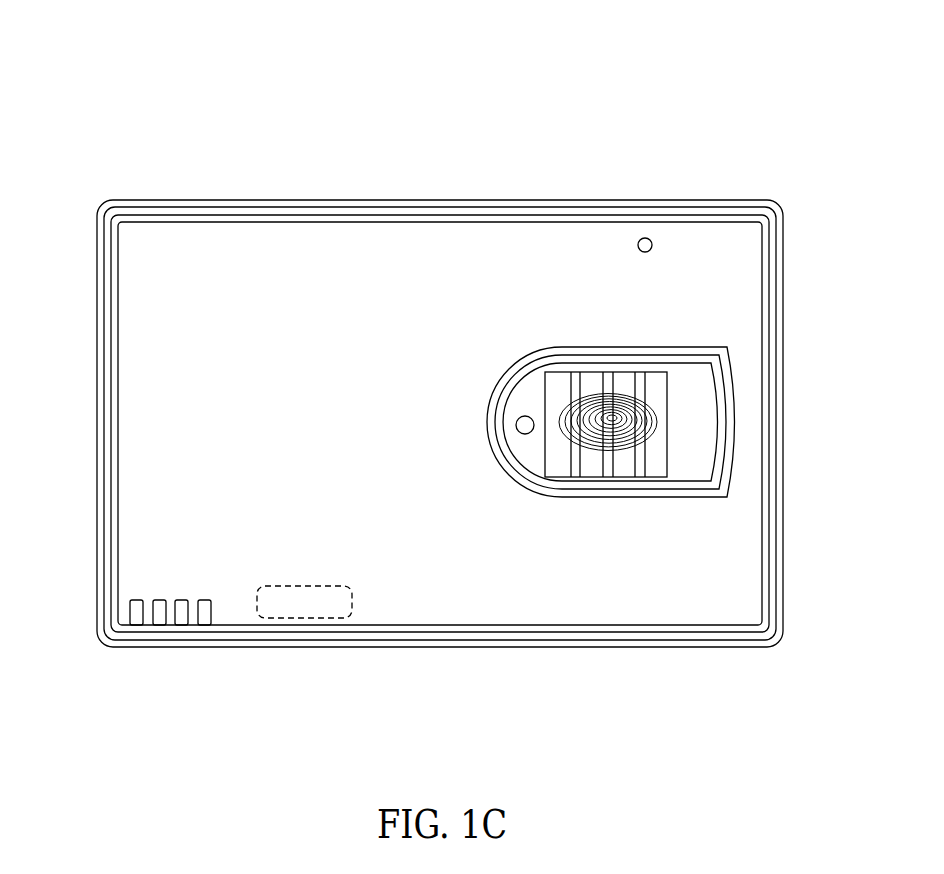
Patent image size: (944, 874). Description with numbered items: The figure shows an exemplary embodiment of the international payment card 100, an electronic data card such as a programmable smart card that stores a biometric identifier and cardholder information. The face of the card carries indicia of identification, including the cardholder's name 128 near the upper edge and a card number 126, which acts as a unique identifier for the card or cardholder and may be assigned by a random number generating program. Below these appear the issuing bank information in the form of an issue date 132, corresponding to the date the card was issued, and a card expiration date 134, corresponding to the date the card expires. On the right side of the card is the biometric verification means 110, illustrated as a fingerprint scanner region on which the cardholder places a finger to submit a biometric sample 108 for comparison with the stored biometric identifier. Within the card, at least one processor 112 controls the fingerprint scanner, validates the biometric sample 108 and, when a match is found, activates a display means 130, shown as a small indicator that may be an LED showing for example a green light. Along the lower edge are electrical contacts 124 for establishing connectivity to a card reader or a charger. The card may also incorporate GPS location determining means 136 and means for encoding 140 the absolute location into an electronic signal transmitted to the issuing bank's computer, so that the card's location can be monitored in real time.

The international payment card 100 is at (259, 108).
The processor 112 is at (492, 190).
The GPS location determining means 136 is at (97, 303).
The means for encoding 140 is at (102, 413).
The cardholder's name 128 is at (193, 237).
The display means 130 is at (648, 237).
The biometric verification means 110 is at (732, 350).
The biometric sample 108 is at (627, 427).
The electrical contacts 124 is at (144, 589).
The card number 126 is at (332, 619).
The issue date 132 is at (535, 605).
The card expiration date 134 is at (708, 602).